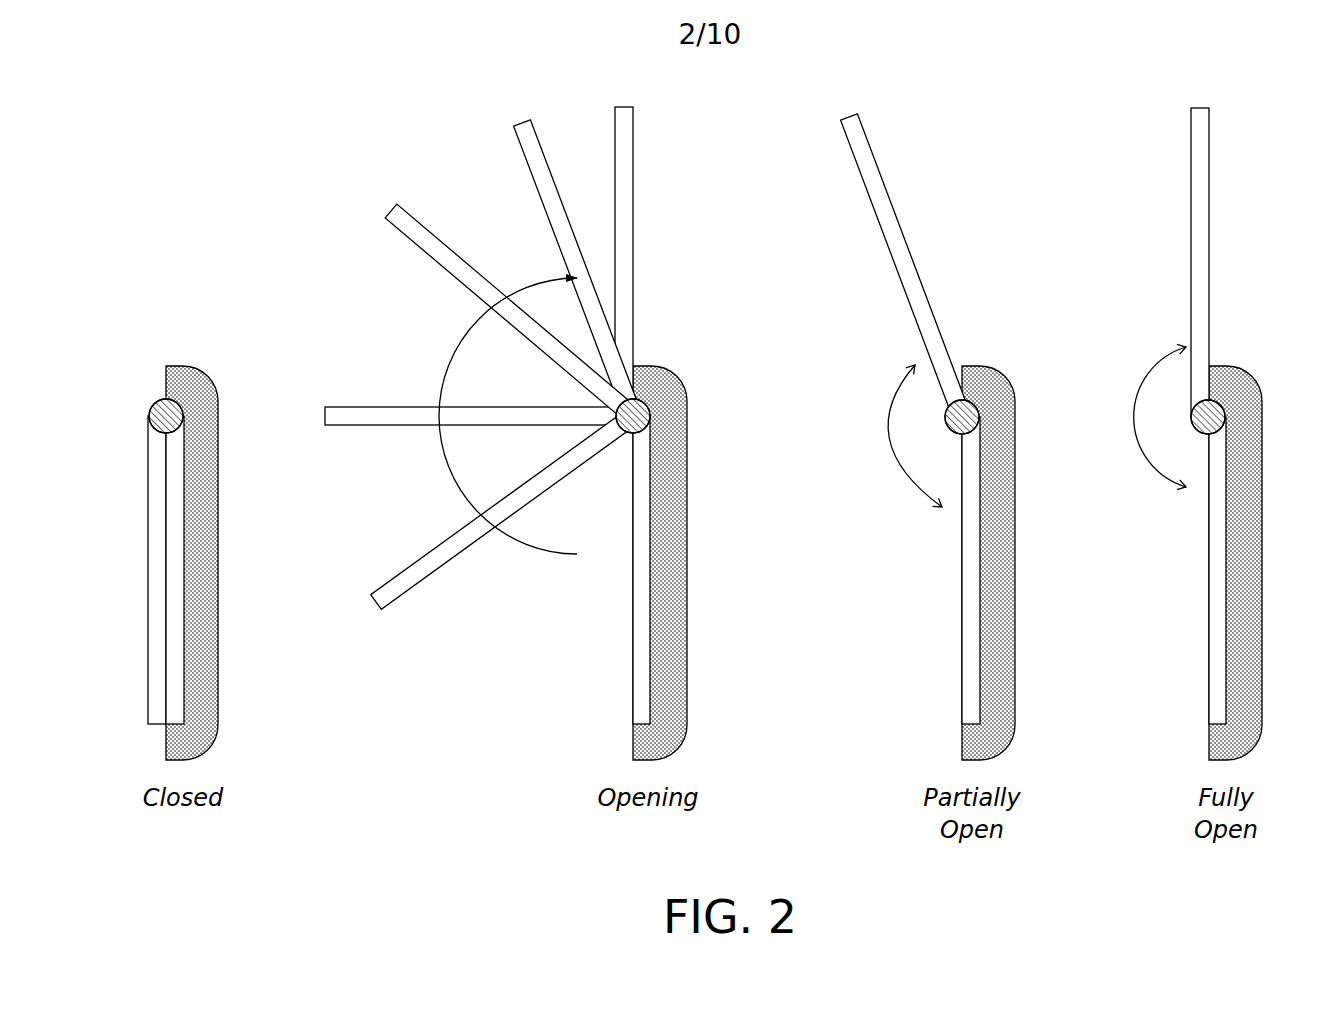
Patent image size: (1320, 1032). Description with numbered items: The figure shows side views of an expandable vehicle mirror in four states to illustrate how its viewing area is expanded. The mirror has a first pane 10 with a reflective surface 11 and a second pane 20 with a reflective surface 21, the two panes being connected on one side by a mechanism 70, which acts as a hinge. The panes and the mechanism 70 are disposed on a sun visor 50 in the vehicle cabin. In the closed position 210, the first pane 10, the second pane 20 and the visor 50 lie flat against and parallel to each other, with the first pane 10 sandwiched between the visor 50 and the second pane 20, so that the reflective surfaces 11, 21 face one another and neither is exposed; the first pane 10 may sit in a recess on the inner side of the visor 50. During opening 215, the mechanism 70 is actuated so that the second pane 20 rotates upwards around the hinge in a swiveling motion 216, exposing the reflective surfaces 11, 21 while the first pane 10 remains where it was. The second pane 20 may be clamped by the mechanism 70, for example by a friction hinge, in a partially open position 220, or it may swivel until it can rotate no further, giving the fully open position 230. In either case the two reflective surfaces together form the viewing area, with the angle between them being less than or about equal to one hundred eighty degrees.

The first pane 10 is at (697, 570).
The reflective surface 11 is at (631, 607).
The second pane 20 is at (679, 415).
The reflective surface 21 is at (518, 163).
The sun visor 50 is at (188, 579).
The mechanism 70 is at (178, 405).
The closed position 210 is at (177, 318).
The opening 215 is at (442, 100).
The swiveling motion 216 is at (495, 416).
The partially open position 220 is at (878, 83).
The fully open position 230 is at (1188, 83).